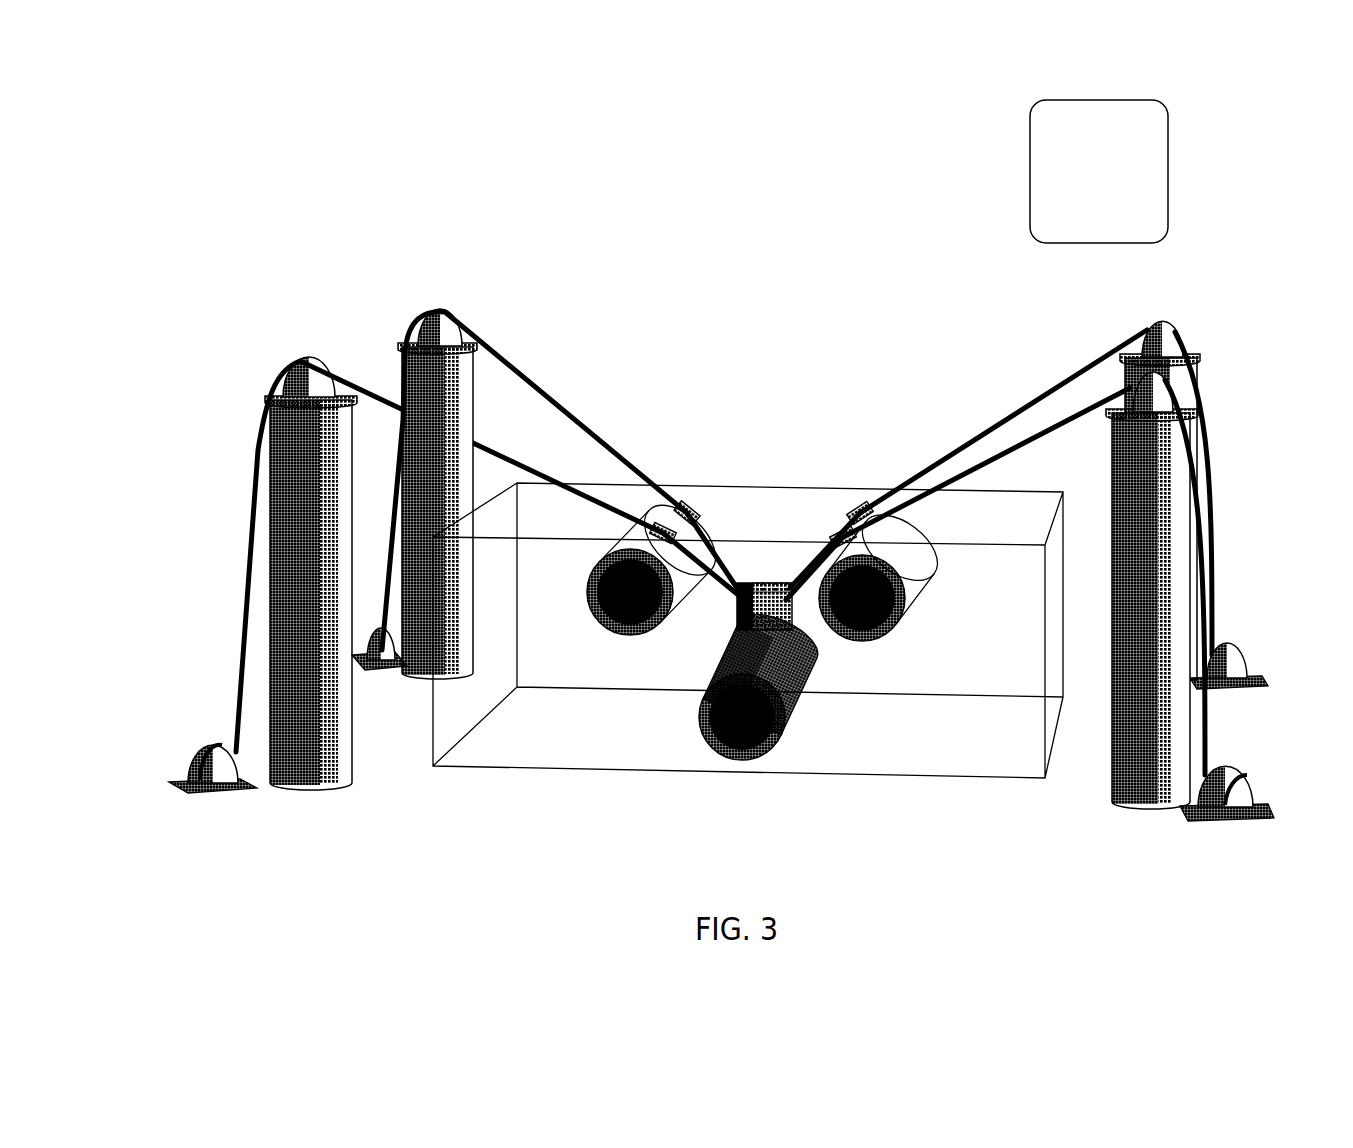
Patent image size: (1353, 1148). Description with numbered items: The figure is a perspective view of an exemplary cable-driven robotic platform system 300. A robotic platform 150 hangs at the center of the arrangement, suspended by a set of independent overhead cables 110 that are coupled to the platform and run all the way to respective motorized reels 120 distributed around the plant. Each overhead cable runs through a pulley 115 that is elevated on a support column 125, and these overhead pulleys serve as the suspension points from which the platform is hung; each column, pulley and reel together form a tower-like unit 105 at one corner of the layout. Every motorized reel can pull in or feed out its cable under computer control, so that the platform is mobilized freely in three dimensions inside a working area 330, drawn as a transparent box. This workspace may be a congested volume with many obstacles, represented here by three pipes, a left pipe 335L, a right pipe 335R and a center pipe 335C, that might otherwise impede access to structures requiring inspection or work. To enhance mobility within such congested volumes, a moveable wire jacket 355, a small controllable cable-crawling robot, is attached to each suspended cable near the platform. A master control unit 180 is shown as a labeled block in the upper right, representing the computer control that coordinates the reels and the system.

The cable-driven robotic platform system 300 is at (449, 123).
The tower assembly 105 is at (306, 326).
The overhead cable 110 is at (385, 393).
The pulley 115 is at (290, 365).
The motorized reel 120 is at (210, 742).
The support column 125 is at (328, 748).
The robotic platform 150 is at (737, 625).
The master control unit 180 is at (1099, 171).
The working area 330 is at (510, 745).
The left pipe 335L is at (585, 598).
The right pipe 335R is at (917, 583).
The center pipe 335C is at (800, 700).
The moveable wire jacket 355 is at (678, 535).